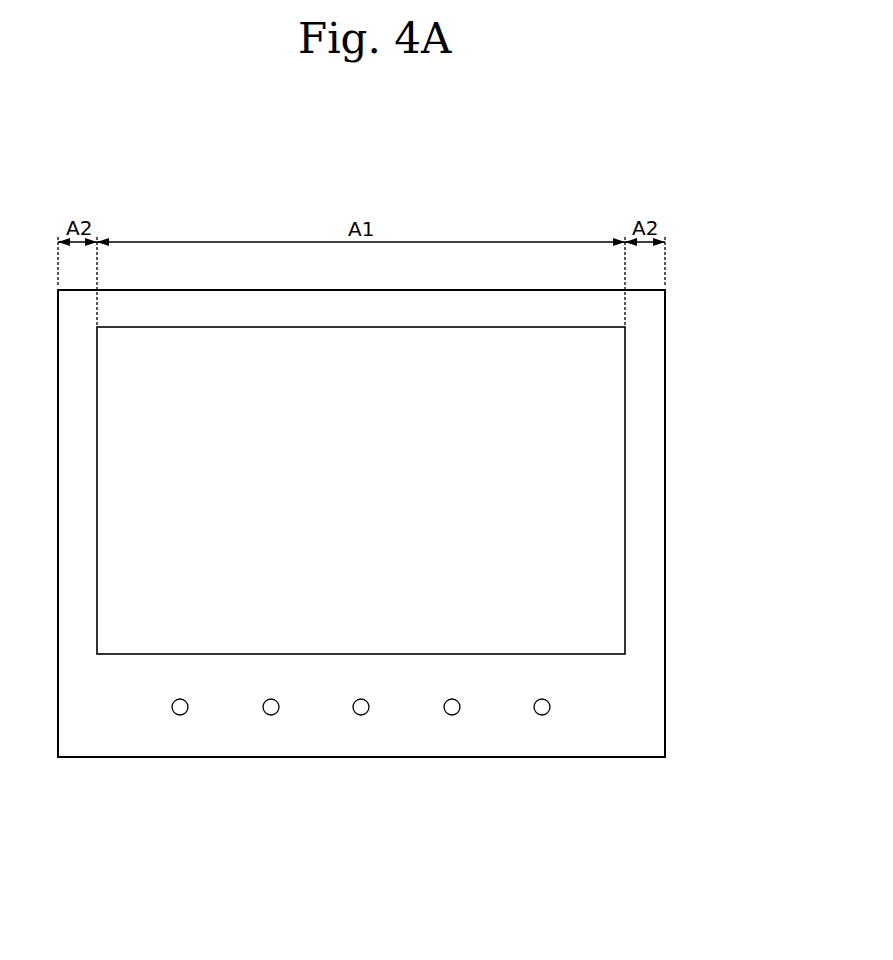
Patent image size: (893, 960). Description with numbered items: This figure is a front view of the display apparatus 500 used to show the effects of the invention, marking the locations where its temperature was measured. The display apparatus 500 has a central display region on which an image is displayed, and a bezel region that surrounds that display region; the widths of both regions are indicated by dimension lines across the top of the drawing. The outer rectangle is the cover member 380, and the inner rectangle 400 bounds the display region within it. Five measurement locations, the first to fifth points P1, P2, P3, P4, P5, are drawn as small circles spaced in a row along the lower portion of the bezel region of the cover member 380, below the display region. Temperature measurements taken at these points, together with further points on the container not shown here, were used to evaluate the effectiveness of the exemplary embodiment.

The cover member 380 is at (652, 524).
The display area / display panel 400 is at (613, 450).
The display apparatus 500 is at (572, 206).
The first point P1 is at (180, 715).
The second point P2 is at (271, 715).
The third point P3 is at (361, 715).
The fourth point P4 is at (452, 715).
The fifth point P5 is at (542, 715).